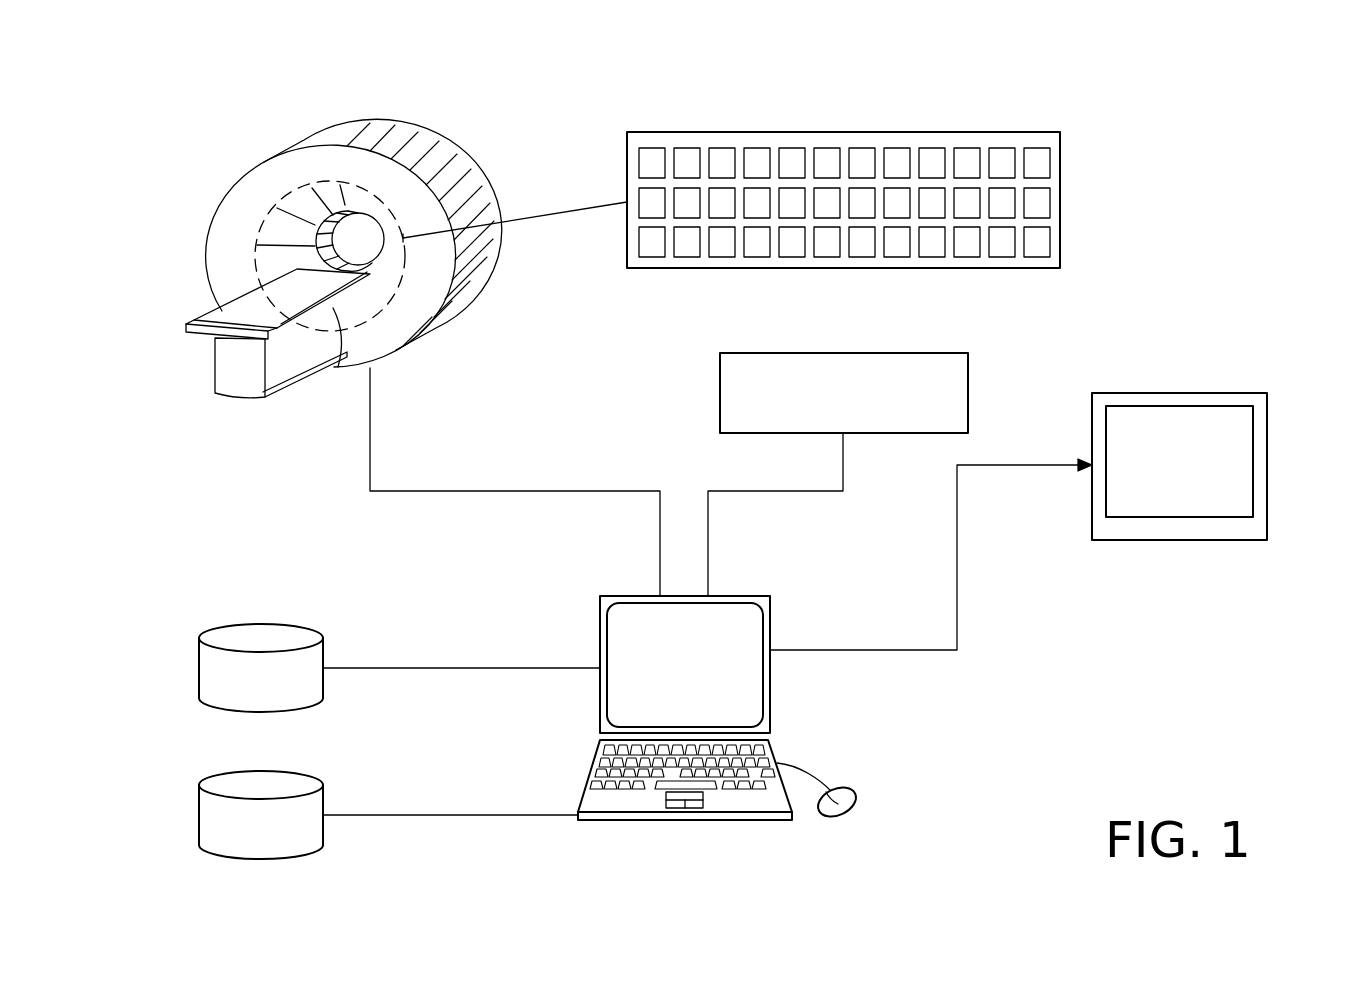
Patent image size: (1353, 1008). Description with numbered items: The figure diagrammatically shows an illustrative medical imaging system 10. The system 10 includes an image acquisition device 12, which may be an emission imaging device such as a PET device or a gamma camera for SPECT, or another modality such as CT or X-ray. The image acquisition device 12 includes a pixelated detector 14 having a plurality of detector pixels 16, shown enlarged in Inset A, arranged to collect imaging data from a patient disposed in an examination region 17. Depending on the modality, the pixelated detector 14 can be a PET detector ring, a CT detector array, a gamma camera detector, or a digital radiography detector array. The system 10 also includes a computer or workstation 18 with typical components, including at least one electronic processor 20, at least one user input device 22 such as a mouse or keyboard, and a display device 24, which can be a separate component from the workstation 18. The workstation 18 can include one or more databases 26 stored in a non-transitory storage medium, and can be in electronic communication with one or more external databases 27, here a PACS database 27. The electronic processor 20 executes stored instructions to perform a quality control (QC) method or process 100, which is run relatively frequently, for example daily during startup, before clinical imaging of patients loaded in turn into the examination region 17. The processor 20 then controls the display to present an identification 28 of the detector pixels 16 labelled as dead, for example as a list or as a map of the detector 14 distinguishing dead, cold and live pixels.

The medical imaging system 10 is at (1268, 157).
The image acquisition device 12 is at (213, 357).
The pixelated detector 14 is at (388, 209).
The detector pixels 16 is at (1048, 242).
The examination region 17 is at (347, 231).
The workstation 18 is at (595, 613).
The electronic processor 20 is at (603, 695).
The user input device 22 is at (858, 800).
The display device 24 is at (697, 677).
The databases 26 is at (199, 668).
The PACS database 27 is at (199, 812).
The identification of dead detector pixels 28 is at (1267, 460).
The quality control (QC) method or process 100 is at (720, 392).